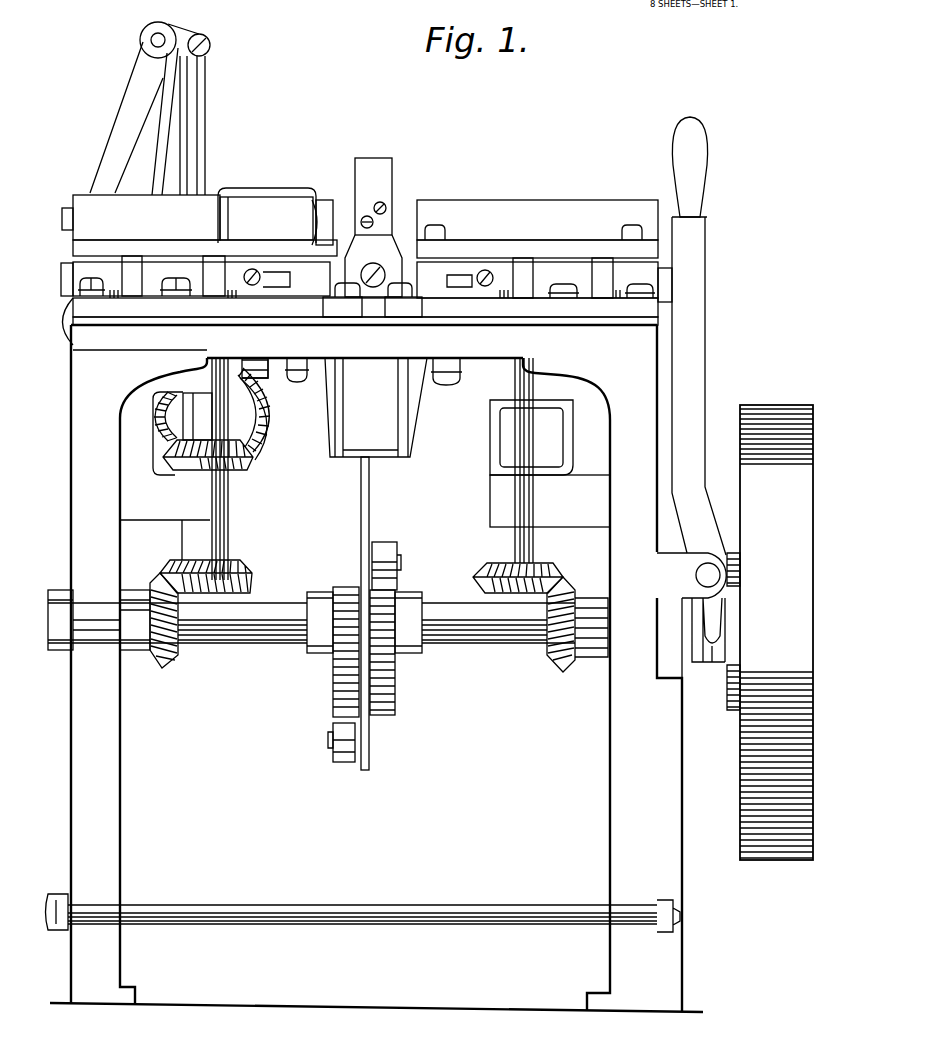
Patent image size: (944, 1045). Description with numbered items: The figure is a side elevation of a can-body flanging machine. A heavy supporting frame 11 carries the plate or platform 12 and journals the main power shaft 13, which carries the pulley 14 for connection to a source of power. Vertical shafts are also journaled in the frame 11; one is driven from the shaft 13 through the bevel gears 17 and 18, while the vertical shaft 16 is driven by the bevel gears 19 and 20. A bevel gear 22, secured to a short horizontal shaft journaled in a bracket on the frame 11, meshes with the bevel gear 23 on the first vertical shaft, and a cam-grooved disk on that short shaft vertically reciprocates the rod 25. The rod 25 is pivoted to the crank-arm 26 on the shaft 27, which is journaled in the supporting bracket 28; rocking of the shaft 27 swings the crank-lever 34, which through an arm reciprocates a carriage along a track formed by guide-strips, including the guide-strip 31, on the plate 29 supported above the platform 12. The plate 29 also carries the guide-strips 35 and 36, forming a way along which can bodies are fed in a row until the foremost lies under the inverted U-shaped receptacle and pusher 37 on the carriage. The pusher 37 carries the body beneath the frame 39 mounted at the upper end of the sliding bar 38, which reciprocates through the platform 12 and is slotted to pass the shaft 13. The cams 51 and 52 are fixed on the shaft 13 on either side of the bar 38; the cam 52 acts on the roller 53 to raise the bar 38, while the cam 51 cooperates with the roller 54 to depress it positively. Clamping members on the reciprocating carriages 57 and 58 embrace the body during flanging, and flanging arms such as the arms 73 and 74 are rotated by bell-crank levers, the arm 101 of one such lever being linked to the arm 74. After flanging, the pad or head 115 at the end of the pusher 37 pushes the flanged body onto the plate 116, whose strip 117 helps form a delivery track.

The supporting frame 11 is at (610, 758).
The plate or platform 12 is at (365, 324).
The main power shaft 13 is at (493, 638).
The pulley 14 is at (775, 400).
The vertical shaft 16 is at (507, 425).
The bevel gear 17 is at (165, 650).
The bevel gear 18 is at (246, 575).
The bevel gear 19 is at (566, 665).
The bevel gear 20 is at (563, 580).
The bevel gear 22 is at (256, 410).
The bevel gear 23 is at (250, 463).
The vertical rod 25 is at (206, 123).
The crank-arm 26 is at (204, 35).
The shaft 27 is at (156, 36).
The supporting bracket 28 is at (172, 92).
The plate 29 is at (134, 250).
The guide-strip 31 is at (87, 200).
The crank-lever 34 is at (110, 141).
The guide-strip 35 is at (228, 219).
The guide-strip 36 is at (325, 204).
The inverted U-shaped receptacle and pusher 37 is at (272, 190).
The sliding bar 38 is at (361, 506).
The frame 39 is at (392, 172).
The cam 51 is at (340, 665).
The cam 52 is at (395, 695).
The roller 53 is at (397, 548).
The roller 54 is at (343, 762).
The reciprocating carriage 57 is at (79, 306).
The reciprocating carriage 58 is at (672, 285).
The arm 73 is at (342, 318).
The arm 74 is at (415, 318).
The arm 101 is at (409, 407).
The pad or head 115 is at (313, 212).
The plate 116 is at (565, 248).
The strip 117 is at (482, 205).